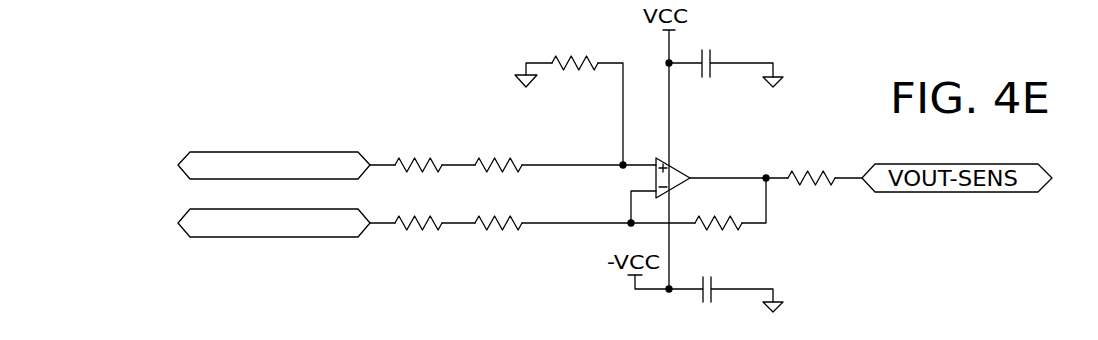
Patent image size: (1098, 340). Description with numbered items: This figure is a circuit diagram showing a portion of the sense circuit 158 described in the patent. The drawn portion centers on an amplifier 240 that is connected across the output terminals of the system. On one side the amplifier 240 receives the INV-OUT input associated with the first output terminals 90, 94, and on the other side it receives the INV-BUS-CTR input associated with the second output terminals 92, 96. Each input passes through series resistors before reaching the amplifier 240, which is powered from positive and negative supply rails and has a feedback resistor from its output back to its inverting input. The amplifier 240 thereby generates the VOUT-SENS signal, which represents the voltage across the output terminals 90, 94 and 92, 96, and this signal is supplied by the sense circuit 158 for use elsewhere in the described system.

The first output terminal 90 is at (264, 140).
The first output terminal 94 is at (268, 152).
The second output terminal 92 is at (255, 248).
The second output terminal 96 is at (258, 238).
The amplifier 240 is at (678, 170).
The sense circuit 158 is at (455, 277).